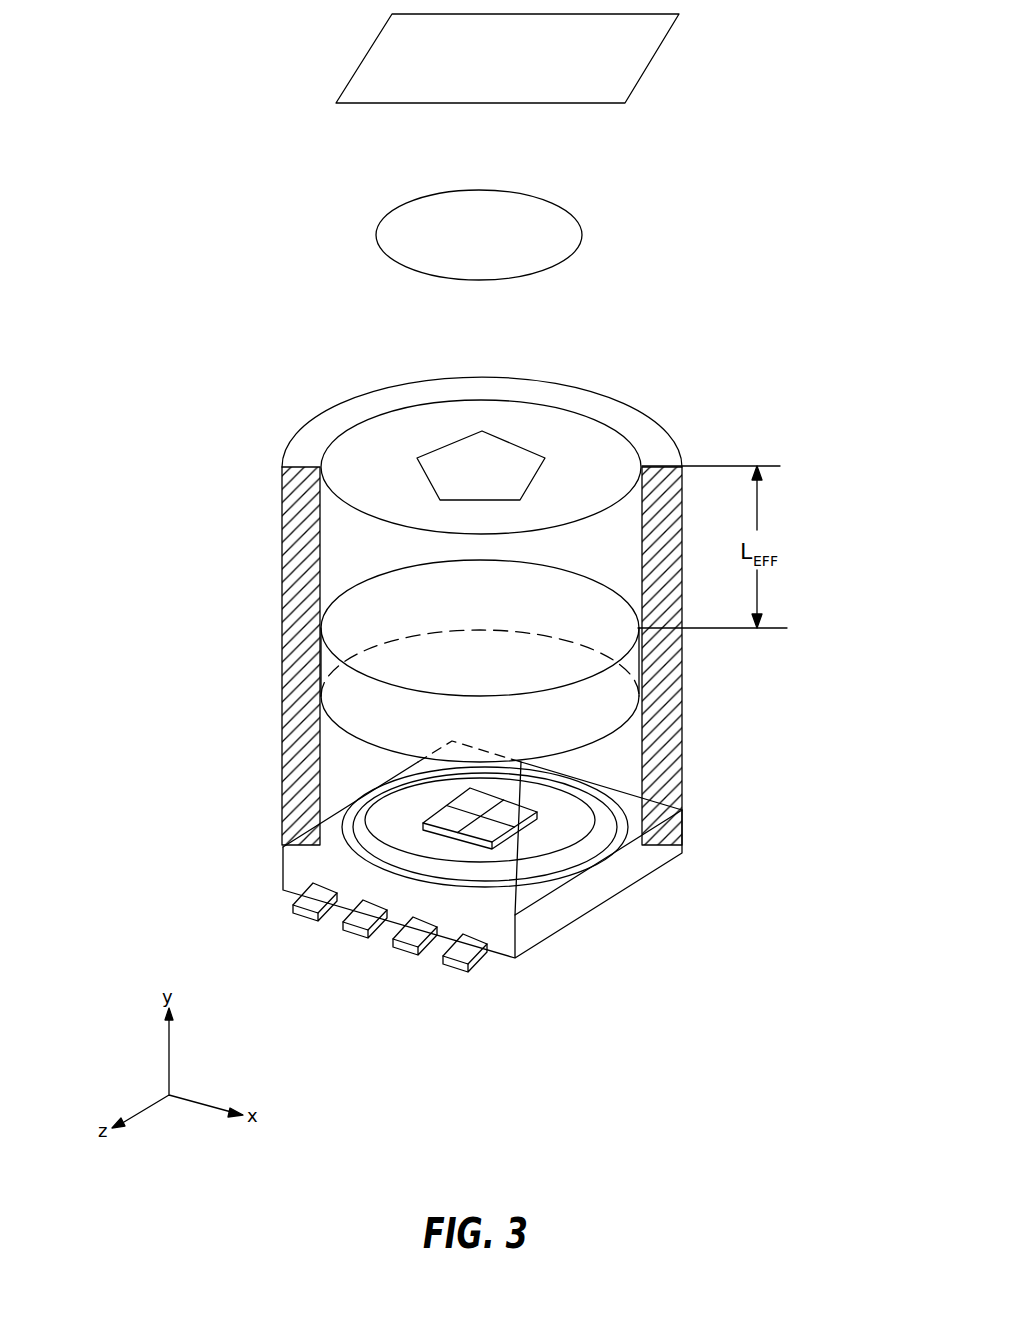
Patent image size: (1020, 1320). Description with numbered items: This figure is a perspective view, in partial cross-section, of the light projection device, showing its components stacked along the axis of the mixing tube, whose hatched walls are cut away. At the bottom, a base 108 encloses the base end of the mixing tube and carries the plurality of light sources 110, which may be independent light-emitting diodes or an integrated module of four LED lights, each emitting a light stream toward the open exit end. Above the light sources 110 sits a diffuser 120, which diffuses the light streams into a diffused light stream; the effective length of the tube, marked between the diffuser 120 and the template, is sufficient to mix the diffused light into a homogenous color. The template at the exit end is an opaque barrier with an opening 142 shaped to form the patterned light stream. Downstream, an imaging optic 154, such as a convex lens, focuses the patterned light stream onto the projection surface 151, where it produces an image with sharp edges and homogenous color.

The projection surface 151 is at (655, 58).
The imaging optic 154 is at (582, 235).
The opening 142 is at (510, 457).
The diffuser 120 is at (620, 735).
The light source 110 is at (562, 922).
The base 108 is at (453, 962).